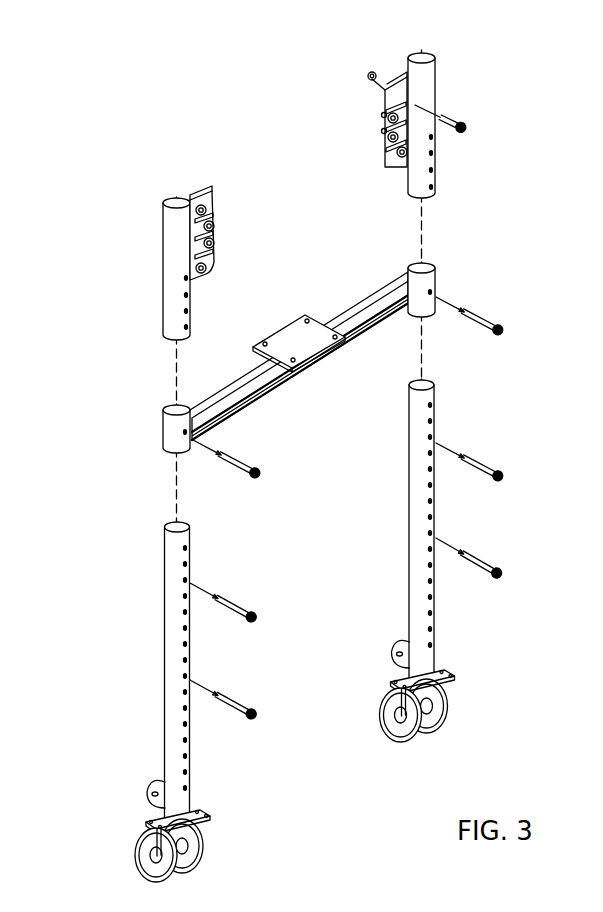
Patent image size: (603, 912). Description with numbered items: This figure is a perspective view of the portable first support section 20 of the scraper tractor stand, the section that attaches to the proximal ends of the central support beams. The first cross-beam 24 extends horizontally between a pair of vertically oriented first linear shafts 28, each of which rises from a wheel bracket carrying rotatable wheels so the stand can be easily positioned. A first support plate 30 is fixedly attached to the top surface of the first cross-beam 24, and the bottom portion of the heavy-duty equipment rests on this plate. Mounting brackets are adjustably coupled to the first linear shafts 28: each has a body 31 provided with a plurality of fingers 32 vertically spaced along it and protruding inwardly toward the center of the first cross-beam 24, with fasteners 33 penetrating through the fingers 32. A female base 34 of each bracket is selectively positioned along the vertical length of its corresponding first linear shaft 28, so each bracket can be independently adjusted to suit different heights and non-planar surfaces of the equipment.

The portable first support section 20 is at (212, 100).
The first cross-beam 24 is at (210, 391).
The first linear shafts 28 is at (175, 697).
The first support plate 30 is at (298, 340).
The body 31 is at (212, 172).
The fingers 32 is at (212, 258).
The fasteners 33 is at (470, 128).
The female base 34 is at (178, 247).